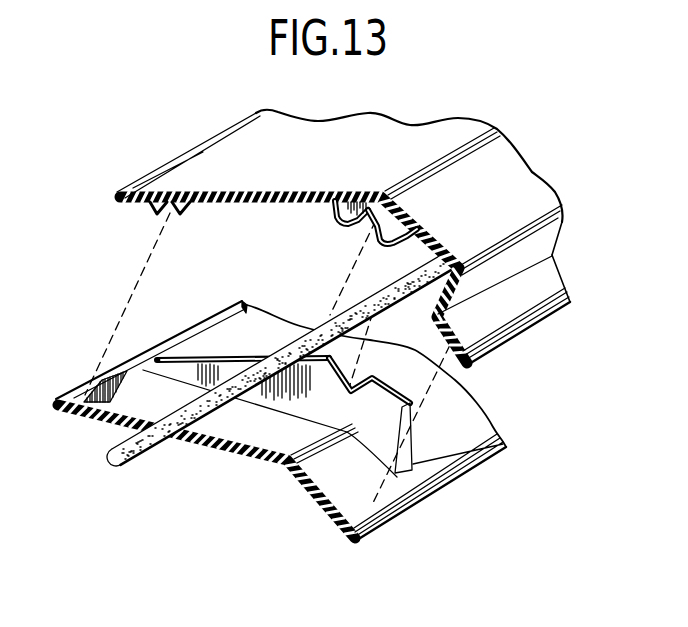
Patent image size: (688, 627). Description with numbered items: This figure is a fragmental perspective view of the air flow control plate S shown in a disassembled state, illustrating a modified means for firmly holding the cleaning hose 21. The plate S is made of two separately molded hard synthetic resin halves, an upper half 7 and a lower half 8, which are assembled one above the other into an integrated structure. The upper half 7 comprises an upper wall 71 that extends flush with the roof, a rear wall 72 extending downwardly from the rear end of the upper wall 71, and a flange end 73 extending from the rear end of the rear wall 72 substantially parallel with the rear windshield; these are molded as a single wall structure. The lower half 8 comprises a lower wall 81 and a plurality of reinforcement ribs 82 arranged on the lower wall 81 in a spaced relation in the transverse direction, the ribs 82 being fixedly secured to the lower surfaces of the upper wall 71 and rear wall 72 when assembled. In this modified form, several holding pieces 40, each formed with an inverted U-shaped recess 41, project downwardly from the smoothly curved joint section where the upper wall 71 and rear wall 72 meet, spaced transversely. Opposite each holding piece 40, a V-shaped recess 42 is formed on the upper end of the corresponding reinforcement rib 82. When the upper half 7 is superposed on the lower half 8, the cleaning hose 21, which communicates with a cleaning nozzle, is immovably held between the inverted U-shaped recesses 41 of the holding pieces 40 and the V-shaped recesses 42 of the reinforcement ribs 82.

The air flow control plate S is at (569, 341).
The upper half 7 is at (523, 332).
The upper wall 71 is at (322, 121).
The rear wall 72 is at (538, 178).
The flange end 73 is at (559, 278).
The holding piece 40 is at (336, 224).
The inverted U-shaped recess 41 is at (379, 245).
The lower half 8 is at (503, 428).
The lower wall 81 is at (240, 443).
The reinforcement rib 82 is at (238, 358).
The V-shaped recess 42 is at (373, 380).
The cleaning hose 21 is at (303, 333).